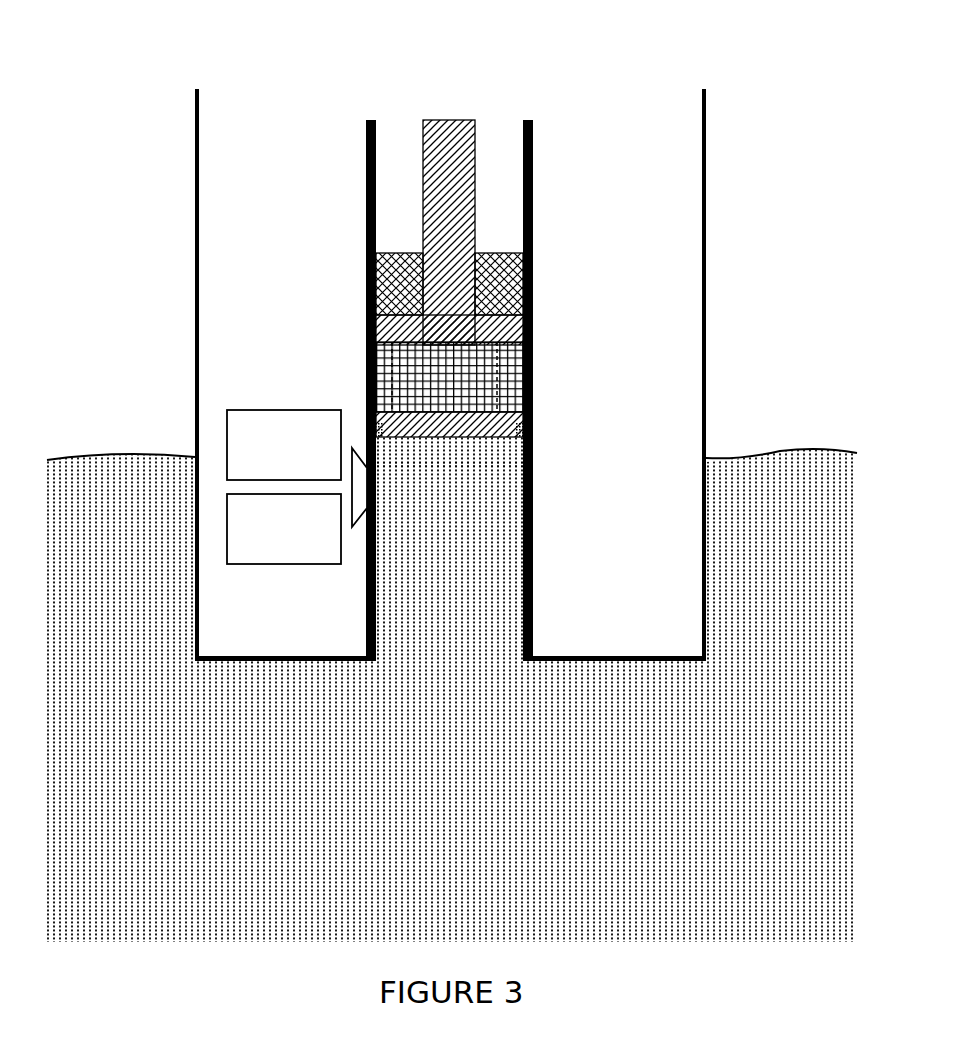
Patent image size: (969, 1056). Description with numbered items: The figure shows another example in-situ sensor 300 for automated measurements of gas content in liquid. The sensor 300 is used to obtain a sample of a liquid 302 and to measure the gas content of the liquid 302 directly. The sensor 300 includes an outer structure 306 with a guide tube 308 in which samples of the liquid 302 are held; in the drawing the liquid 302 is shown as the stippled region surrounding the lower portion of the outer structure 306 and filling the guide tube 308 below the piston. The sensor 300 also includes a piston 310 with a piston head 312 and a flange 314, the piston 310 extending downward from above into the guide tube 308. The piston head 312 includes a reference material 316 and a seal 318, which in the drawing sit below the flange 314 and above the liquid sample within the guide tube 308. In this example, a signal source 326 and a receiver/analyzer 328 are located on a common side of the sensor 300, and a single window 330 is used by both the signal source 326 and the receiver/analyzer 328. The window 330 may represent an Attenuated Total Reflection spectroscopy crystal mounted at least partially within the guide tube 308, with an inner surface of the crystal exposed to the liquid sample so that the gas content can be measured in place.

The in-situ sensor 300 is at (170, 43).
The liquid 302 is at (95, 875).
The outer structure 306 is at (246, 664).
The guide tube 308 is at (418, 667).
The piston 310 is at (434, 115).
The piston head 312 is at (397, 330).
The flange 314 is at (397, 283).
The reference material 316 is at (497, 382).
The seal 318 is at (516, 442).
The signal source 326 is at (250, 404).
The receiver/analyzer 328 is at (252, 567).
The window 330 is at (382, 497).